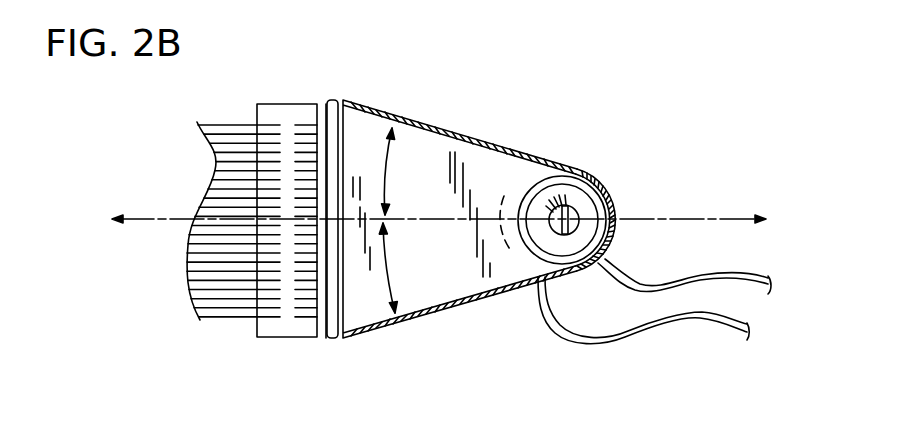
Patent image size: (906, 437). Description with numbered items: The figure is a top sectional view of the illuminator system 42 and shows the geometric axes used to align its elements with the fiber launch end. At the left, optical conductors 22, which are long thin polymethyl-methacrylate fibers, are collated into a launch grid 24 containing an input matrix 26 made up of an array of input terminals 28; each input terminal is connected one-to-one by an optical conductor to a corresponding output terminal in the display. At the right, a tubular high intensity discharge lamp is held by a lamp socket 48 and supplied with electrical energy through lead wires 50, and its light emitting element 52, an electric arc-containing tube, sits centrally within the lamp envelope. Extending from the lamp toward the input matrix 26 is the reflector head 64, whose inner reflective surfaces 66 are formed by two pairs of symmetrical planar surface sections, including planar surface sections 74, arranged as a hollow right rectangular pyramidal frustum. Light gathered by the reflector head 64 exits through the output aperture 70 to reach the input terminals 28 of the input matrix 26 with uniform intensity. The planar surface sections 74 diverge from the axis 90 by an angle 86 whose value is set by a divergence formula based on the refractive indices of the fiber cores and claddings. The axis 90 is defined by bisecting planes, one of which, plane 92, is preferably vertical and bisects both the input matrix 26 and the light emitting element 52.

The optical conductors 22 is at (225, 316).
The launch grid 24 is at (277, 338).
The input matrix 26 is at (325, 338).
The input terminals 28 is at (318, 207).
The illuminator system 42 is at (645, 98).
The lamp socket 48 is at (595, 163).
The lead wires 50 is at (710, 324).
The light emitting element 52 is at (552, 222).
The reflector head 64 is at (460, 134).
The inner reflective surfaces 66 is at (457, 270).
The output aperture 70 is at (326, 112).
The planar surface sections 74 is at (483, 143).
The angle 86 is at (390, 163).
The axis 90 is at (630, 221).
The plane 92 is at (170, 218).